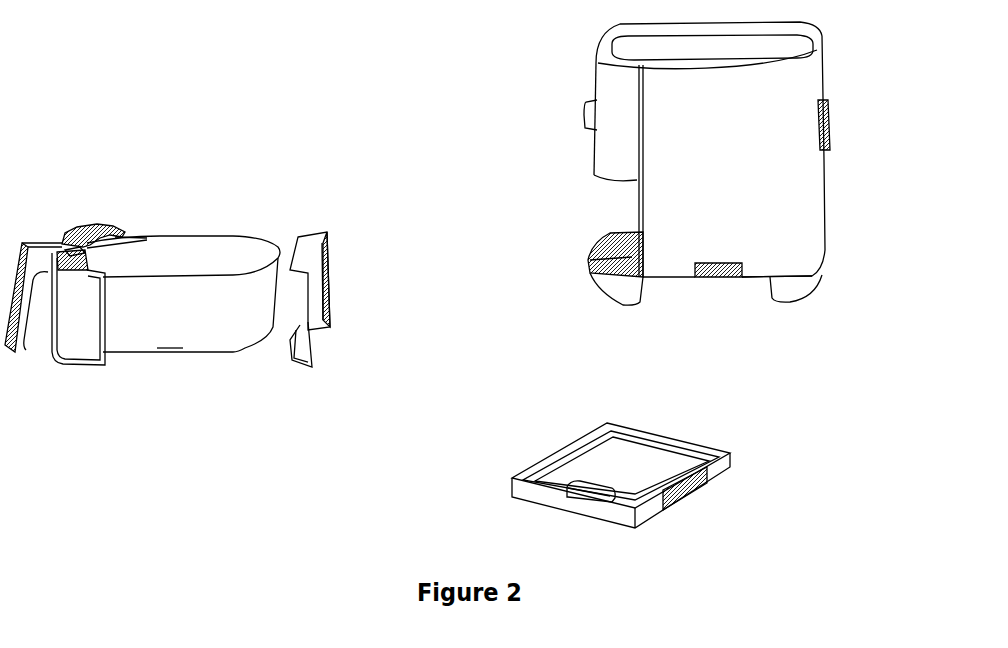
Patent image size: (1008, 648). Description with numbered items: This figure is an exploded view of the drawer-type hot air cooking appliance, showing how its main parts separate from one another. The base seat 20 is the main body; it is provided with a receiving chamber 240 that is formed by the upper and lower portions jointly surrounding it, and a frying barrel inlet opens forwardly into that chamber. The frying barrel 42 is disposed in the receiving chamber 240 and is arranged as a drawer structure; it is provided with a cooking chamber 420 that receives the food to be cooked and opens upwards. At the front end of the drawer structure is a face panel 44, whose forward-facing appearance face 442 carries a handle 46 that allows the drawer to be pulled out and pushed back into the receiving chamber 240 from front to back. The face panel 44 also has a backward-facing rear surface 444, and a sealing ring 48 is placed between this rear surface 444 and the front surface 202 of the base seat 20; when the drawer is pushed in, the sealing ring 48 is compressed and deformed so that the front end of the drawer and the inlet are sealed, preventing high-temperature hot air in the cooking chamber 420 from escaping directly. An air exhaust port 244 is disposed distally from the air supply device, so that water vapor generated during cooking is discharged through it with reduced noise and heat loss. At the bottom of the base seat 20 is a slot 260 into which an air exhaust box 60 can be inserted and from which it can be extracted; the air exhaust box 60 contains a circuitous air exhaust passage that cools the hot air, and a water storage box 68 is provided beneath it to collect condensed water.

The base seat 20 is at (810, 88).
The front surface 202 is at (633, 220).
The receiving chamber 240 is at (615, 202).
The air exhaust port 244 is at (712, 277).
The slot 260 is at (743, 290).
The frying barrel 42 is at (215, 328).
The cooking chamber 420 is at (150, 250).
The face panel 44 is at (60, 230).
The appearance face 442 is at (60, 315).
The rear surface 444 is at (140, 247).
The handle 46 is at (24, 345).
The sealing ring 48 is at (328, 295).
The air exhaust box 60 is at (633, 480).
The water storage box 68 is at (728, 458).